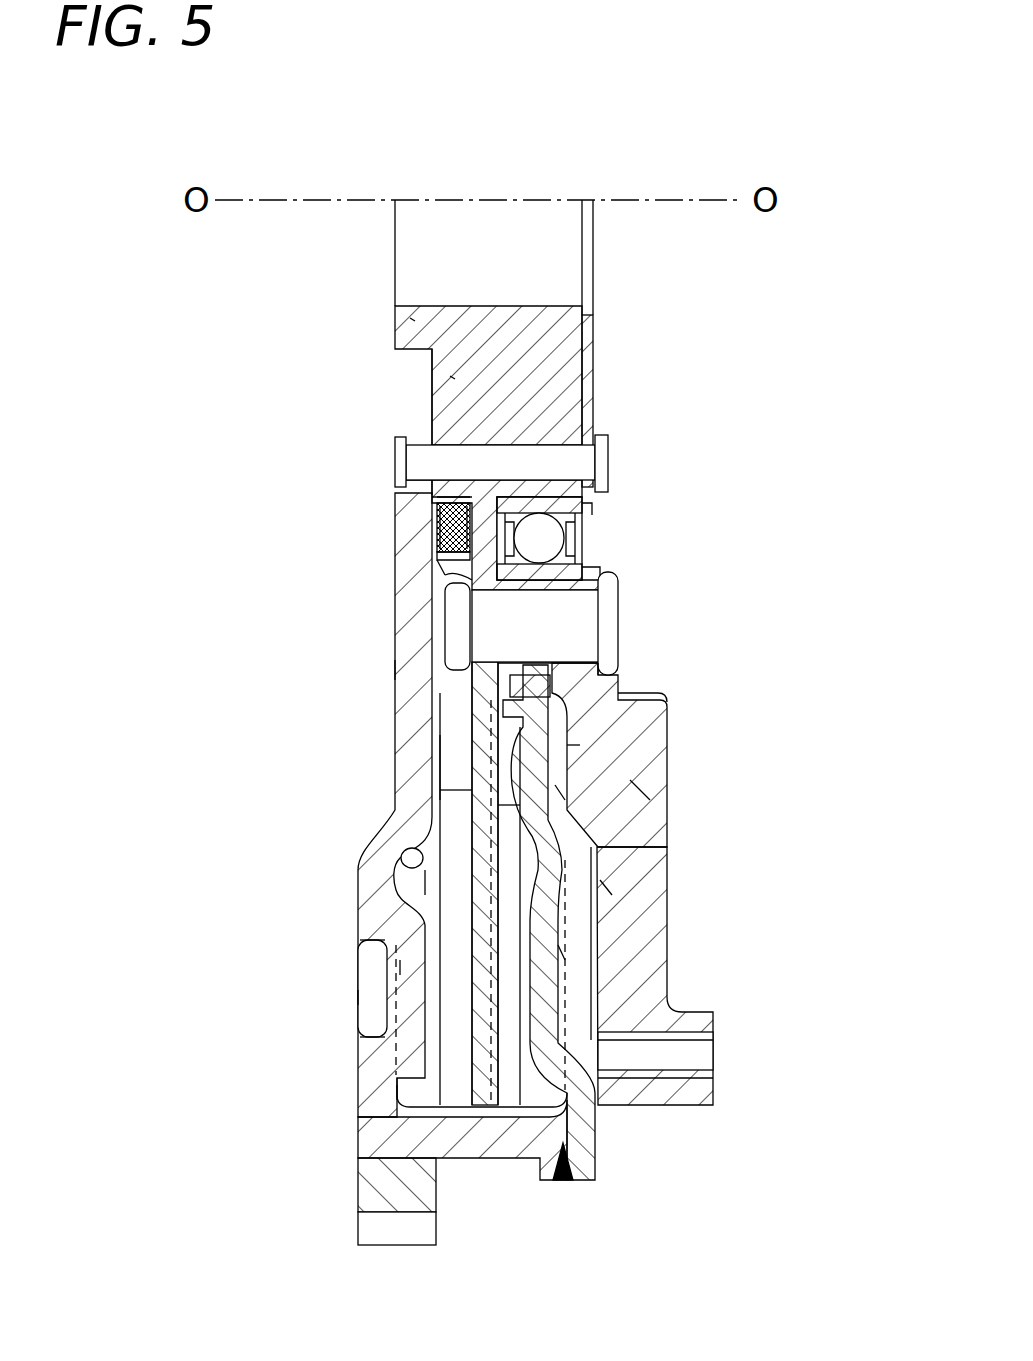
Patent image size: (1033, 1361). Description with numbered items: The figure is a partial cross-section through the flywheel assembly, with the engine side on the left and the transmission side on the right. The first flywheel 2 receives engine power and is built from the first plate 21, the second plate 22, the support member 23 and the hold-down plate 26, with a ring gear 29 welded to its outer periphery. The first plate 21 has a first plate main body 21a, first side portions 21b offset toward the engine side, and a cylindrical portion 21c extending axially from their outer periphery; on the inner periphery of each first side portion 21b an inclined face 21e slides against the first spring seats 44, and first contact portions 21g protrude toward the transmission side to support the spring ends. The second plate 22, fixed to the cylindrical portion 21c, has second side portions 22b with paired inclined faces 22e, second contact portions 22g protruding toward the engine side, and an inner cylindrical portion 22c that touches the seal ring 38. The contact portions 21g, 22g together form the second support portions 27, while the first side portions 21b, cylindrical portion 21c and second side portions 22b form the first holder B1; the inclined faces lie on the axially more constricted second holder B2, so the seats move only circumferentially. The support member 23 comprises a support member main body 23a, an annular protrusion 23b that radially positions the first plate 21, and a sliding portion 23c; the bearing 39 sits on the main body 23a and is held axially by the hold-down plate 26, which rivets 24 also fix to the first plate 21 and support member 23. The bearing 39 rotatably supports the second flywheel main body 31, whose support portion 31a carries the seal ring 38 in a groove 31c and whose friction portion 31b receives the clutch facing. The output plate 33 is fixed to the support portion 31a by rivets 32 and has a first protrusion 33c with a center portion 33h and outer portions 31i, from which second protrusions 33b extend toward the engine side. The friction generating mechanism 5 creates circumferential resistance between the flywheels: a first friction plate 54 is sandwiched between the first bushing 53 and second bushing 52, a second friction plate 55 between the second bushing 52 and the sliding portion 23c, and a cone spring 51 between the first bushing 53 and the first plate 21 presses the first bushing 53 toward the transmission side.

The first flywheel 2 is at (605, 1190).
The friction generating mechanism 5 is at (437, 510).
The first plate 21 is at (390, 608).
The first plate main body 21a is at (560, 800).
The first side portion 21b is at (367, 998).
The cylindrical portion 21c is at (473, 1133).
The inclined face 21e is at (400, 850).
The first contact portion 21g is at (407, 968).
The second plate 22 is at (640, 912).
The second side portion 22b is at (580, 953).
The inner cylindrical portion 22c is at (560, 750).
The inclined face 22e is at (603, 890).
The second contact portion 22g is at (650, 1000).
The support member 23 is at (422, 415).
The support member main body 23a is at (455, 378).
The annular protrusion 23b is at (415, 322).
The sliding portion 23c is at (590, 560).
The rivet 24 is at (580, 460).
The hold-down plate 26 is at (592, 340).
The second support portion 27 is at (373, 940).
The ring gear 29 is at (377, 1192).
The second flywheel main body 31 is at (673, 728).
The support portion 31a is at (590, 668).
The friction portion 31b is at (640, 790).
The groove 31c is at (470, 655).
The outer portion 31i is at (510, 812).
The rivet 32 is at (570, 620).
The output plate 33 is at (427, 728).
The second protrusion 33b is at (430, 883).
The first protrusion 33c is at (257, 723).
The center portion 33h is at (460, 790).
The seal ring 38 is at (560, 690).
The bearing 39 is at (595, 535).
The first spring seat 44 is at (407, 1110).
The cone spring 51 is at (437, 560).
The second bushing 52 is at (437, 578).
The first bushing 53 is at (437, 538).
The first friction plate 54 is at (423, 520).
The second friction plate 55 is at (590, 507).
The first holder B1 is at (373, 1032).
The second holder B2 is at (387, 670).